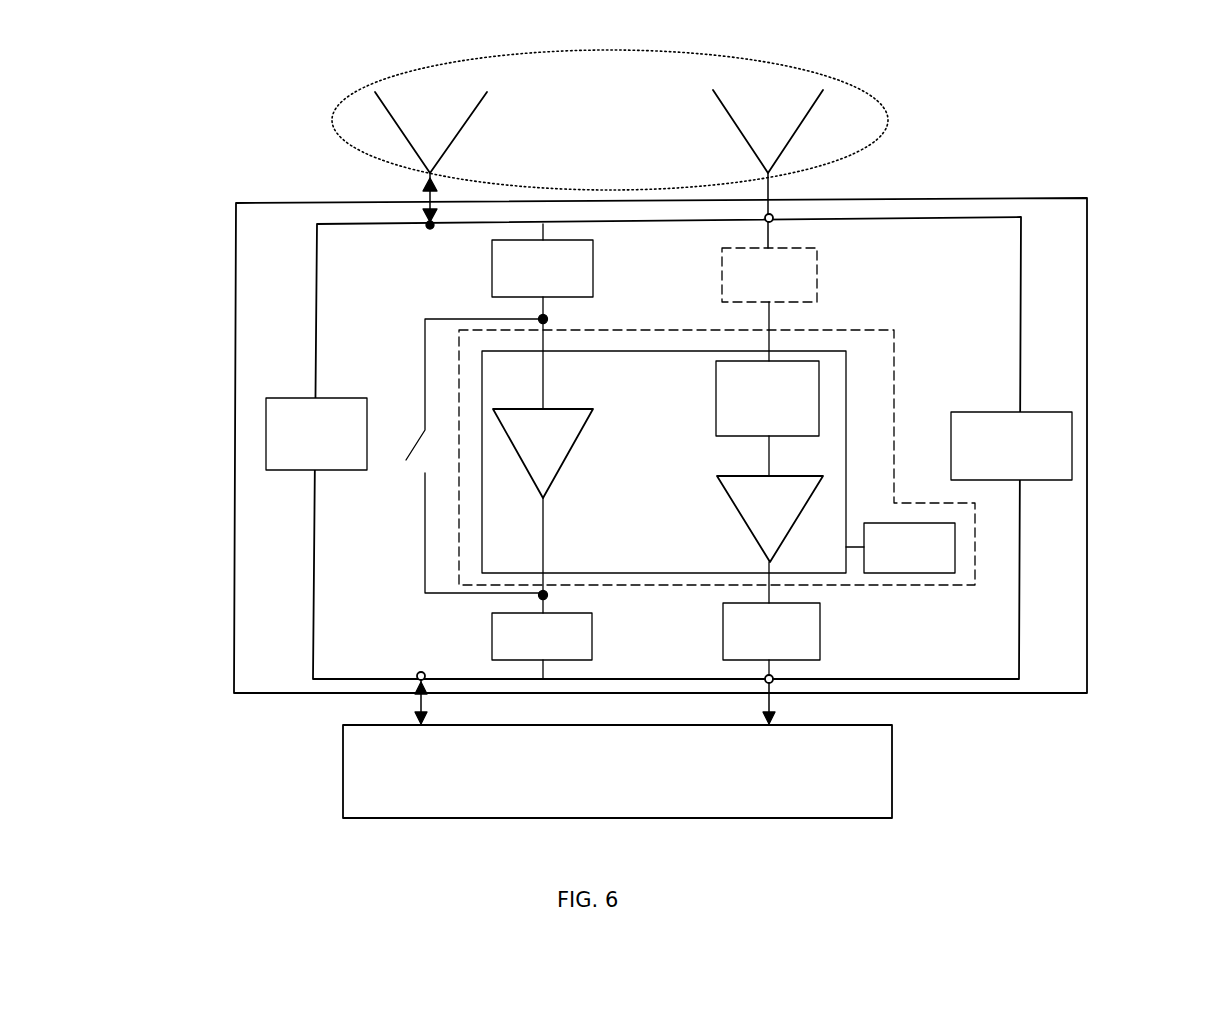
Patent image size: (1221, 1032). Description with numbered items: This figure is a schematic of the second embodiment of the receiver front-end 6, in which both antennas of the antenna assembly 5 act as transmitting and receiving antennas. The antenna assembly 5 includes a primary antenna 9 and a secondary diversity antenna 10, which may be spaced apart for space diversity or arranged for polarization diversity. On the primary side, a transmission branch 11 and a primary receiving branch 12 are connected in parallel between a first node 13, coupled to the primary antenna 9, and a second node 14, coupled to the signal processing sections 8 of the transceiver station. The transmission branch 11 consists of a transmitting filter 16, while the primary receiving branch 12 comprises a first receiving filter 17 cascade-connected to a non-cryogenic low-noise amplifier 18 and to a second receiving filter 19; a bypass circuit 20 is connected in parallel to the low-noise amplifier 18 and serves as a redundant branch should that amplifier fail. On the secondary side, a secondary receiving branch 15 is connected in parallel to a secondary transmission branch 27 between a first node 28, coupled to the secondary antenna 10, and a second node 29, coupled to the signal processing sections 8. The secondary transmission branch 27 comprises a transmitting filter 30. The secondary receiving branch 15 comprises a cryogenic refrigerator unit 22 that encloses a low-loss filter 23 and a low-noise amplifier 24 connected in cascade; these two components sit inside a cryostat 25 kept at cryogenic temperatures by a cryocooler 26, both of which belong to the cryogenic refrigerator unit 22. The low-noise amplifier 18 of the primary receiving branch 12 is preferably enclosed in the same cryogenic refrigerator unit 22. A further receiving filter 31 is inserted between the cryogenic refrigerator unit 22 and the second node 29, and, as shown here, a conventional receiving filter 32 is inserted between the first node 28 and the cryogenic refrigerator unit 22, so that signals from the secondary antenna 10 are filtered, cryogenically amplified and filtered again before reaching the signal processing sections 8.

The antenna assembly 5 is at (855, 101).
The receiver front-end 6 is at (1070, 307).
The signal processing sections 8 is at (387, 773).
The primary antenna 9 is at (428, 113).
The secondary antenna 10 is at (750, 102).
The transmission branch 11 is at (313, 628).
The primary receiving branch 12 is at (543, 553).
The first node 13 is at (430, 224).
The second node 14 is at (420, 677).
The secondary receiving branch 15 is at (773, 340).
The transmitting filter 16 is at (287, 434).
The first receiving filter 17 is at (582, 273).
The non-cryogenic low-noise amplifier 18 is at (553, 461).
The second receiving filter 19 is at (573, 638).
The bypass circuit 20 is at (425, 498).
The cryogenic refrigerator unit 22 is at (865, 415).
The low-loss filter 23 is at (738, 392).
The low-noise amplifier 24 is at (755, 528).
The cryostat 25 is at (640, 348).
The cryocooler 26 is at (900, 567).
The secondary transmission branch 27 is at (1020, 597).
The first node 28 is at (777, 218).
The second node 29 is at (775, 679).
The transmitting filter 30 is at (1040, 452).
The further receiving filter 31 is at (748, 627).
The conventional receiving filter 32 is at (818, 280).